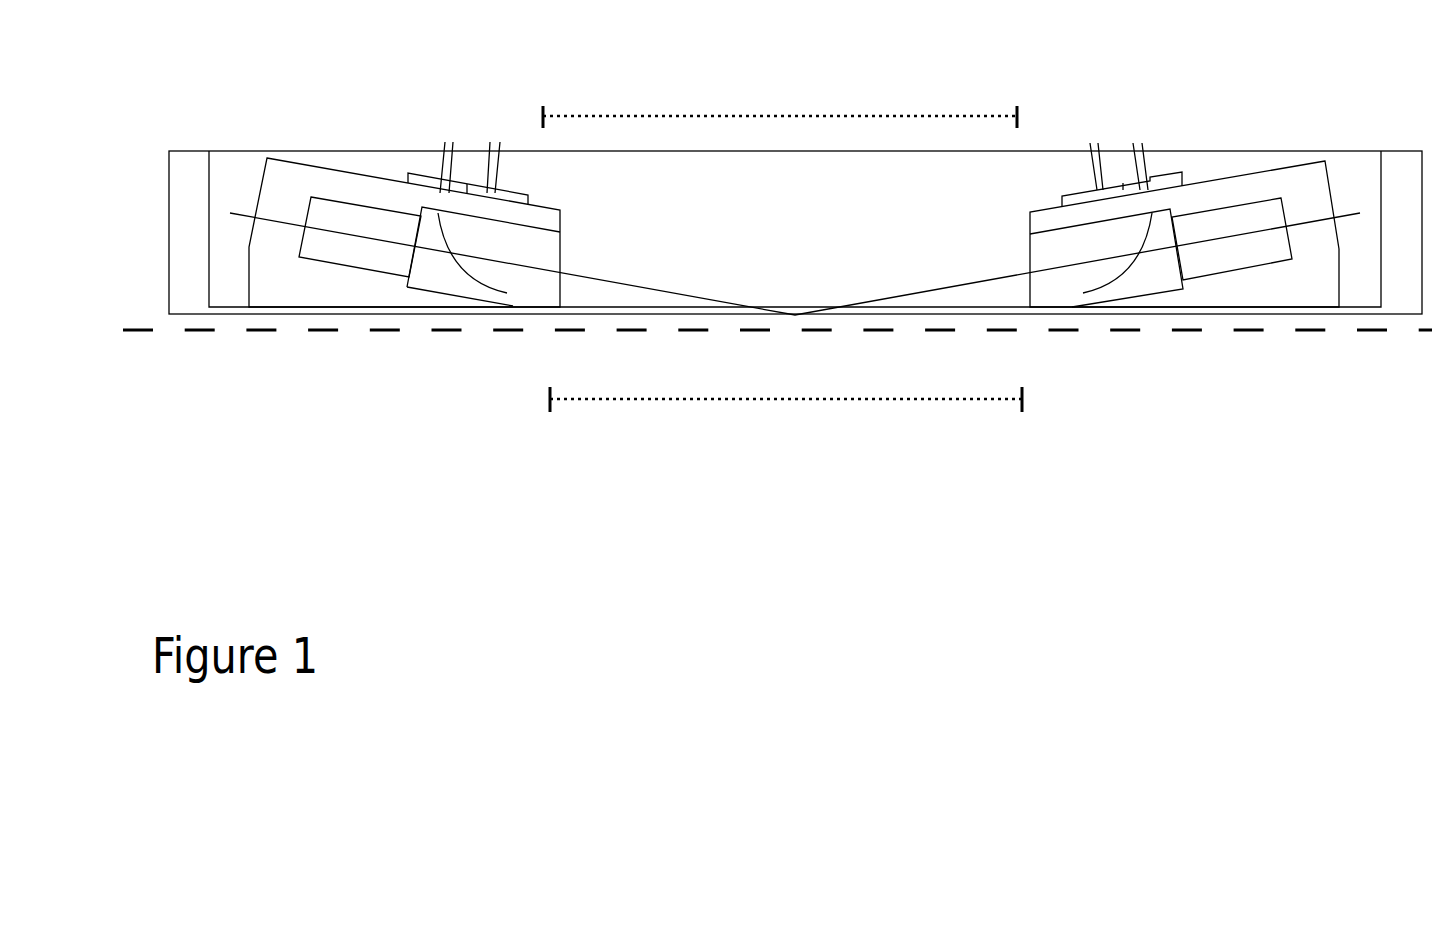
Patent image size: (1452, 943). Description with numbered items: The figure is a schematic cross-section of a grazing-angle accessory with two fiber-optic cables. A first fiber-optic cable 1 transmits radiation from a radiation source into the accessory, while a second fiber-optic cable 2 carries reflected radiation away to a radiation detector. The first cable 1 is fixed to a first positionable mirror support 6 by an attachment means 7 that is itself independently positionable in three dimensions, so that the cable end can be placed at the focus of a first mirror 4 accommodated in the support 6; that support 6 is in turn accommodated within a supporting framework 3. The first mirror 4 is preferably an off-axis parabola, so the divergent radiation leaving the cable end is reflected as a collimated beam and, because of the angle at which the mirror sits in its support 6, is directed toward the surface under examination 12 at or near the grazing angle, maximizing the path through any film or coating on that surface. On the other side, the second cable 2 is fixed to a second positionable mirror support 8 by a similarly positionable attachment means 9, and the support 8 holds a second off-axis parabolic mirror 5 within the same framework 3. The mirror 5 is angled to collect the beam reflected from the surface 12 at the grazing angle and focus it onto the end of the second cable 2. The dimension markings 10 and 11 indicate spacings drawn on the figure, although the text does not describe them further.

The first fiber-optic cable 1 is at (468, 147).
The second fiber-optic cable 2 is at (1108, 160).
The supporting framework 3 is at (186, 168).
The first mirror 4 is at (427, 277).
The second mirror 5 is at (1151, 272).
The first positionable mirror support 6 is at (263, 268).
The attachment means 7 is at (408, 173).
The second positionable mirror support 8 is at (1295, 273).
The attachment means 9 is at (1158, 177).
The emitter-detector spacing 10 is at (780, 80).
The measurement spacing 11 is at (786, 426).
The surface under examination 12 is at (1402, 338).